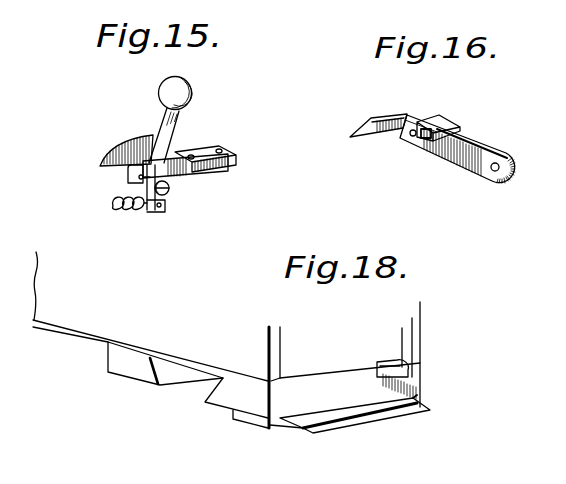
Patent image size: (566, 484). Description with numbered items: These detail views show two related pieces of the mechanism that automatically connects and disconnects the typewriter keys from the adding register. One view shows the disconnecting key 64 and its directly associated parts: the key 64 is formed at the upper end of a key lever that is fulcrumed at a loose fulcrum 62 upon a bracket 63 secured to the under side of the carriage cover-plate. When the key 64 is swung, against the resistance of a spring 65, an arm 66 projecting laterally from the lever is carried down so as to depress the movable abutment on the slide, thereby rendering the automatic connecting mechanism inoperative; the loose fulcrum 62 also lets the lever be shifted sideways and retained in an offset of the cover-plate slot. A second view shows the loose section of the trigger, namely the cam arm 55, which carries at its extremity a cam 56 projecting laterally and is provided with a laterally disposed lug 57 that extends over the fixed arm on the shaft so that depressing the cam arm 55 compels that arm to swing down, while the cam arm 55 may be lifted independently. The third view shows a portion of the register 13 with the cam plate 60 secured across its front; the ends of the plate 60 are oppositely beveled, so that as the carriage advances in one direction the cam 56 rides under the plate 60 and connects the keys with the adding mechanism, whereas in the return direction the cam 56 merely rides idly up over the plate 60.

In FIG. 18, the register 13 is at (226, 340).
In FIG. 16, the cam arm 55 is at (478, 143).
In FIG. 16, the cam 56 is at (363, 134).
In FIG. 16, the lug 57 is at (432, 141).
In FIG. 18, the cam plate 60 is at (362, 419).
In FIG. 15, the fulcrum 62 is at (168, 194).
In FIG. 15, the bracket 63 is at (190, 174).
In FIG. 15, the disconnecting key 64 is at (191, 91).
In FIG. 15, the spring 65 is at (126, 210).
In FIG. 15, the arm 66 is at (121, 145).